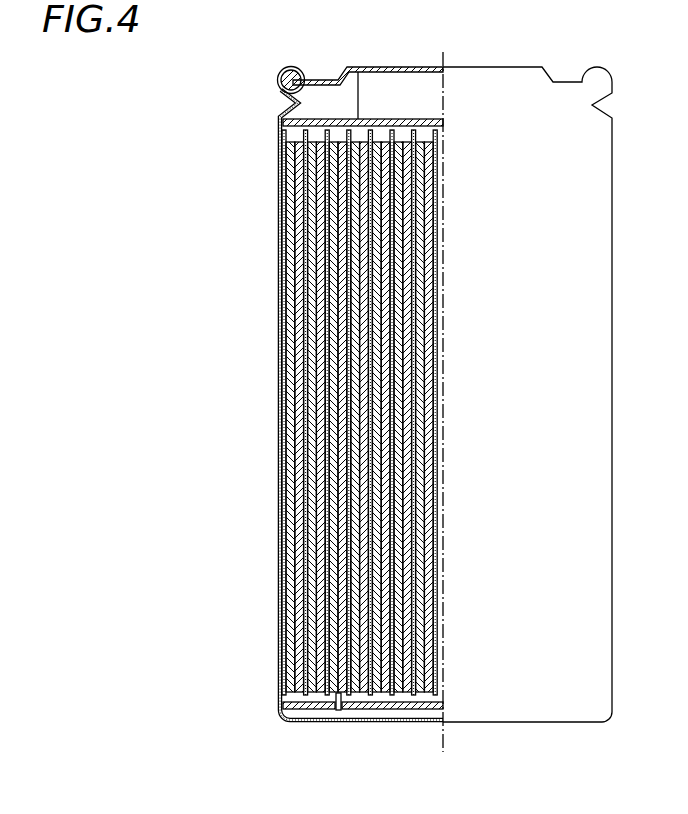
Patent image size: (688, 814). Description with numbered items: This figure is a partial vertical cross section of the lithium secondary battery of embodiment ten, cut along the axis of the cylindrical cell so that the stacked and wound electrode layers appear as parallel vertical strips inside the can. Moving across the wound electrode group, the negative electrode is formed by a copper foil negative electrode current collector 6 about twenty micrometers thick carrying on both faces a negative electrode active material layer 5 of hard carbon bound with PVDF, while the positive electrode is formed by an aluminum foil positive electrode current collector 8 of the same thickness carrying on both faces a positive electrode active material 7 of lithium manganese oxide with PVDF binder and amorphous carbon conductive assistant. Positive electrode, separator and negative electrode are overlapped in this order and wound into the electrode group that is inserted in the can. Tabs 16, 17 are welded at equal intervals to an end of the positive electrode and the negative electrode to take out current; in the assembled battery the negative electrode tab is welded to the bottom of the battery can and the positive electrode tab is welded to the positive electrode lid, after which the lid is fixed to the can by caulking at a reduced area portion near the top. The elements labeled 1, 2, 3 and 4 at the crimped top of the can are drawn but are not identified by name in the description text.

The sealing plate 1 is at (338, 66).
The gasket 2 is at (298, 66).
The battery case 3 is at (282, 100).
The outer electrode layer 4 is at (280, 160).
The negative electrode active material layer 5 is at (280, 242).
The negative electrode current collector 6 is at (297, 219).
The positive electrode active material 7 is at (282, 283).
The positive electrode current collector 8 is at (300, 358).
The tab 16 is at (338, 711).
The tab 17 is at (372, 98).